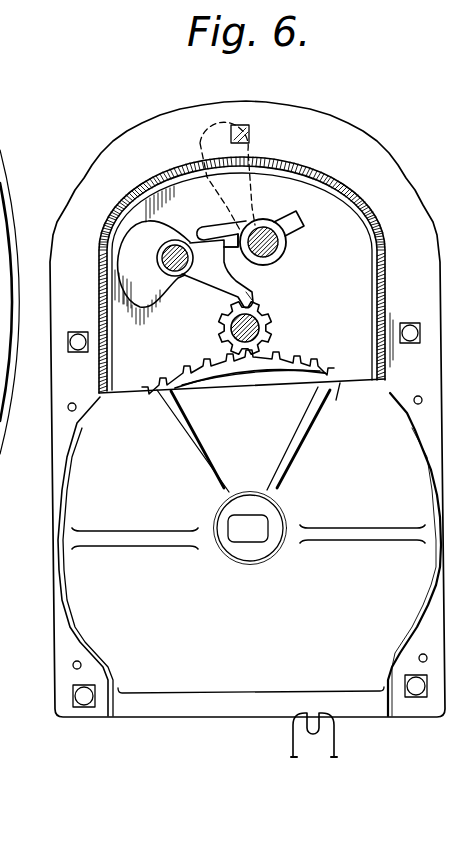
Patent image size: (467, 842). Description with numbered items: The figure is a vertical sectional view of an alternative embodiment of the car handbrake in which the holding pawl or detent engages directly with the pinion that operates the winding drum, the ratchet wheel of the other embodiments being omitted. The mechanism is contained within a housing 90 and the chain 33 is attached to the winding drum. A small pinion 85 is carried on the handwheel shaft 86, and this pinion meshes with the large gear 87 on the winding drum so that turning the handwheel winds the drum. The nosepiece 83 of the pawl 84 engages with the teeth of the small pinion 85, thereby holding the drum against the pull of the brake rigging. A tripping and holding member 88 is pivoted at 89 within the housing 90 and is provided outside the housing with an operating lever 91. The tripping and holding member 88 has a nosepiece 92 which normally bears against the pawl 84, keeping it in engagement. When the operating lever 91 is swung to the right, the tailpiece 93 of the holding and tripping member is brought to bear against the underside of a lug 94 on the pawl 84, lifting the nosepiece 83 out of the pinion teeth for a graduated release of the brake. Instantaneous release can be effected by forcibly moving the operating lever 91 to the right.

The chain 33 is at (292, 748).
The nosepiece 83 is at (254, 292).
The pawl 84 is at (210, 290).
The small pinion 85 is at (216, 340).
The handwheel shaft 86 is at (253, 349).
The large gear 87 is at (284, 363).
The tripping and holding member 88 is at (266, 220).
The pivot 89 is at (272, 232).
The housing 90 is at (100, 400).
The operating lever 91 is at (200, 143).
The nosepiece 92 is at (202, 224).
The tailpiece 93 is at (302, 218).
The lug 94 is at (231, 245).